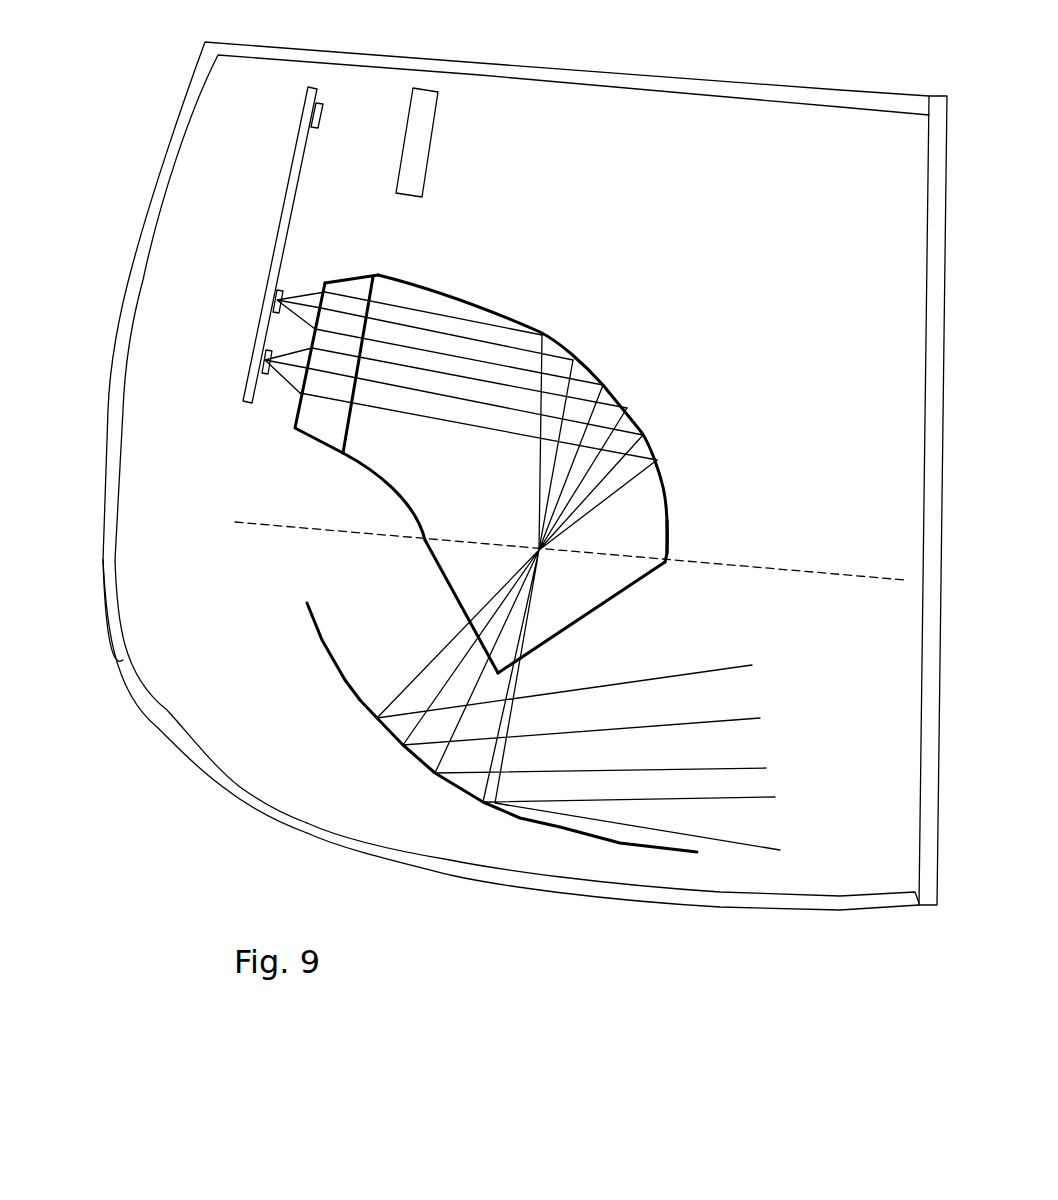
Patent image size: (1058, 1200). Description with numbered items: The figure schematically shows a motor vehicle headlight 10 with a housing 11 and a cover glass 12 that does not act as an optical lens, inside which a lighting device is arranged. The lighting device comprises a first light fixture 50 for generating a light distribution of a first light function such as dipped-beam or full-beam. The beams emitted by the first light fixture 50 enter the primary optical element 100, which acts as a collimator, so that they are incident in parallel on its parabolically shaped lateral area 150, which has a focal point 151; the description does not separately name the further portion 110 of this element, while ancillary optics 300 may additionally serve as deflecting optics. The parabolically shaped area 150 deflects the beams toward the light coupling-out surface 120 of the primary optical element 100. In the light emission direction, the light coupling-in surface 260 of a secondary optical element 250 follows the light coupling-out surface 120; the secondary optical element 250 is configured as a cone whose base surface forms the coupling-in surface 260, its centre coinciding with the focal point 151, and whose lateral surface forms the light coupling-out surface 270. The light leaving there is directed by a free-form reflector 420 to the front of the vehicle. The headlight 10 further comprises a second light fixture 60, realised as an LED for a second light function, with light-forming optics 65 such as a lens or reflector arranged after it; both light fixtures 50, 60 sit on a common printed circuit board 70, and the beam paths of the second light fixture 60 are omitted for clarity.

The motor vehicle headlight 10 is at (108, 243).
The housing 11 is at (721, 908).
The cover glass 12 is at (925, 887).
The first light fixture 50 is at (250, 278).
The second light fixture 60 is at (313, 113).
The light-forming optics 65 is at (425, 122).
The printed circuit board 70 is at (280, 245).
The primary optical element 100 is at (493, 543).
The boundary surface 110 is at (350, 418).
The light coupling-out surface 120 is at (542, 335).
The parabolically shaped area 150 is at (623, 407).
The focal point 151 is at (667, 517).
The secondary optical element 250 is at (590, 590).
The light coupling-in surface 260 is at (460, 543).
The light coupling-out surface 270 is at (555, 638).
The ancillary optics 300 is at (359, 289).
The free-form reflector 420 is at (385, 732).